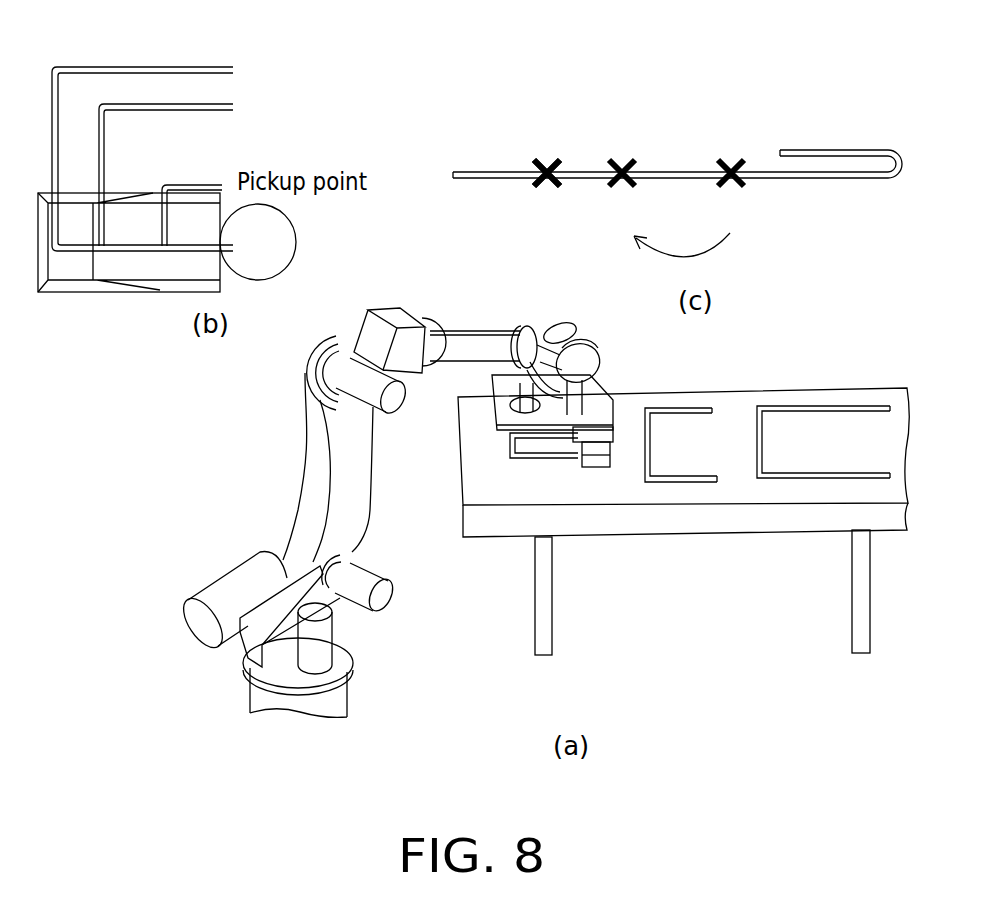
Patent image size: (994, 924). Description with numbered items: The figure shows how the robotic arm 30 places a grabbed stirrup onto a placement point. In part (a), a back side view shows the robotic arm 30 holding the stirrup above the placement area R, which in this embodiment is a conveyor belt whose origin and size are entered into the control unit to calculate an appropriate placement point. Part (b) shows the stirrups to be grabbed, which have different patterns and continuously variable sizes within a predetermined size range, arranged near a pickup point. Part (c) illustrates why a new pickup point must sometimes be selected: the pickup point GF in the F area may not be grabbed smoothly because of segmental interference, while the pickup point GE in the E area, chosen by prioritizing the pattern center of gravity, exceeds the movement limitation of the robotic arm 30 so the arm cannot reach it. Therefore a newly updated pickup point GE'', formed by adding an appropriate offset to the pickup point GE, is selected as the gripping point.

The robotic arm 30 is at (317, 472).
The placement area R is at (822, 433).
The E area E is at (841, 149).
The F area F is at (547, 153).
The pickup point in the F area GF is at (550, 195).
The newly updated pickup point GE'' is at (628, 195).
The pickup point in the E area GE is at (734, 195).